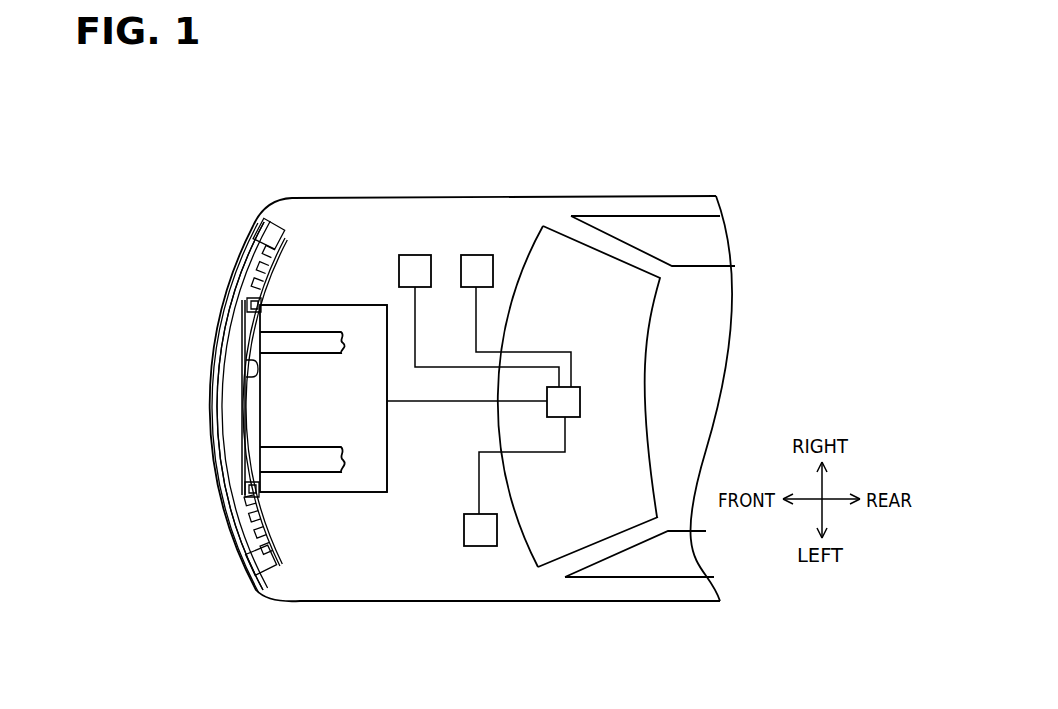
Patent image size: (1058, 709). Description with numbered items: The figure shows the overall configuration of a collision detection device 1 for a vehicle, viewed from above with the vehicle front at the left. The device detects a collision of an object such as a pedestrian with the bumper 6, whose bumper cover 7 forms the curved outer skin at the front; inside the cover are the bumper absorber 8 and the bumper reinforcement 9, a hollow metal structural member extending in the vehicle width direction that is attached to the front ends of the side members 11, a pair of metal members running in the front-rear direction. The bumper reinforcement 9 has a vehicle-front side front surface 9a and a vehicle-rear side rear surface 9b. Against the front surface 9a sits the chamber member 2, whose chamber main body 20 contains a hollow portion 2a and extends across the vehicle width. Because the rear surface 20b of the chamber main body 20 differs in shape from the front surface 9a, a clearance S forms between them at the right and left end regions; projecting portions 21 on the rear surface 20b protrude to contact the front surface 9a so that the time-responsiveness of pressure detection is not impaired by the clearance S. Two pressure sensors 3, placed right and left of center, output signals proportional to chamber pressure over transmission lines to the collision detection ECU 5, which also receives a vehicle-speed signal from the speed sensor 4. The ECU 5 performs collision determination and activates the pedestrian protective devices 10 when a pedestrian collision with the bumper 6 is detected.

The collision detection device 1 is at (449, 117).
The chamber member 2 is at (102, 316).
The hollow portion 2a is at (212, 311).
The pressure sensor 3 is at (261, 303).
The speed sensor 4 is at (413, 253).
The collision detection electronic control unit (ECU) 5 is at (580, 402).
The bumper 6 is at (187, 409).
The bumper cover 7 is at (218, 492).
The bumper absorber 8 is at (215, 461).
The bumper reinforcement 9 is at (260, 409).
The front surface 9a is at (243, 405).
The rear surface 9b is at (262, 392).
The pedestrian protective device 10 is at (476, 254).
The side member 11 is at (325, 330).
The chamber main body 20 is at (212, 340).
The rear surface 20b is at (247, 377).
The projecting portion 21 is at (280, 240).
The clearance S is at (257, 258).